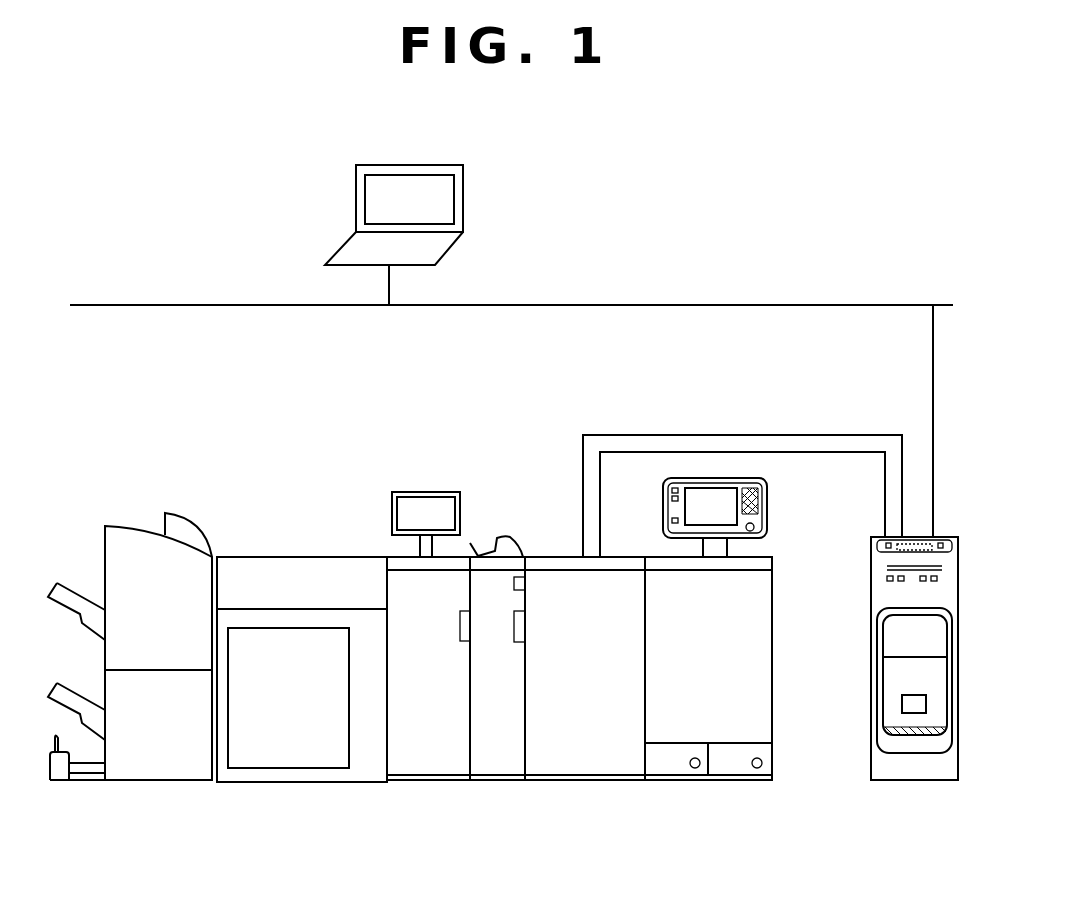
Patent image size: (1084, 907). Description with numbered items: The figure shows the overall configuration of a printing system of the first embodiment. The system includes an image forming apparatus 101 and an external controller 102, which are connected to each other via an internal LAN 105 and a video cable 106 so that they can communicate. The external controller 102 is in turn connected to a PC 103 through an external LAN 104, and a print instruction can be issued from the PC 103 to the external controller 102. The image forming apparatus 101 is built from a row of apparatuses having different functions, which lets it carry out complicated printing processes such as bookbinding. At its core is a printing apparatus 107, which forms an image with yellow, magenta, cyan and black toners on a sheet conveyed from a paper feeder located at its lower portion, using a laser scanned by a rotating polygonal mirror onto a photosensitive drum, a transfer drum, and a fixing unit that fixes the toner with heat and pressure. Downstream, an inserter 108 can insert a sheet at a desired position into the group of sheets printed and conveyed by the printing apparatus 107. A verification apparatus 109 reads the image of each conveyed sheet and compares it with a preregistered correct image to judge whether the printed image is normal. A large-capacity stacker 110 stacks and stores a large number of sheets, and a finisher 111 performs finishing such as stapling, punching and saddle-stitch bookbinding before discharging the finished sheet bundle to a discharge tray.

The image forming apparatus 101 is at (785, 843).
The external controller 102 is at (910, 782).
The PC 103 is at (465, 190).
The external LAN 104 is at (765, 305).
The internal LAN 105 is at (822, 453).
The video cable 106 is at (779, 434).
The printing apparatus 107 is at (710, 782).
The inserter 108 is at (507, 782).
The verification apparatus 109 is at (427, 782).
The large-capacity stacker 110 is at (278, 784).
The finisher 111 is at (153, 782).